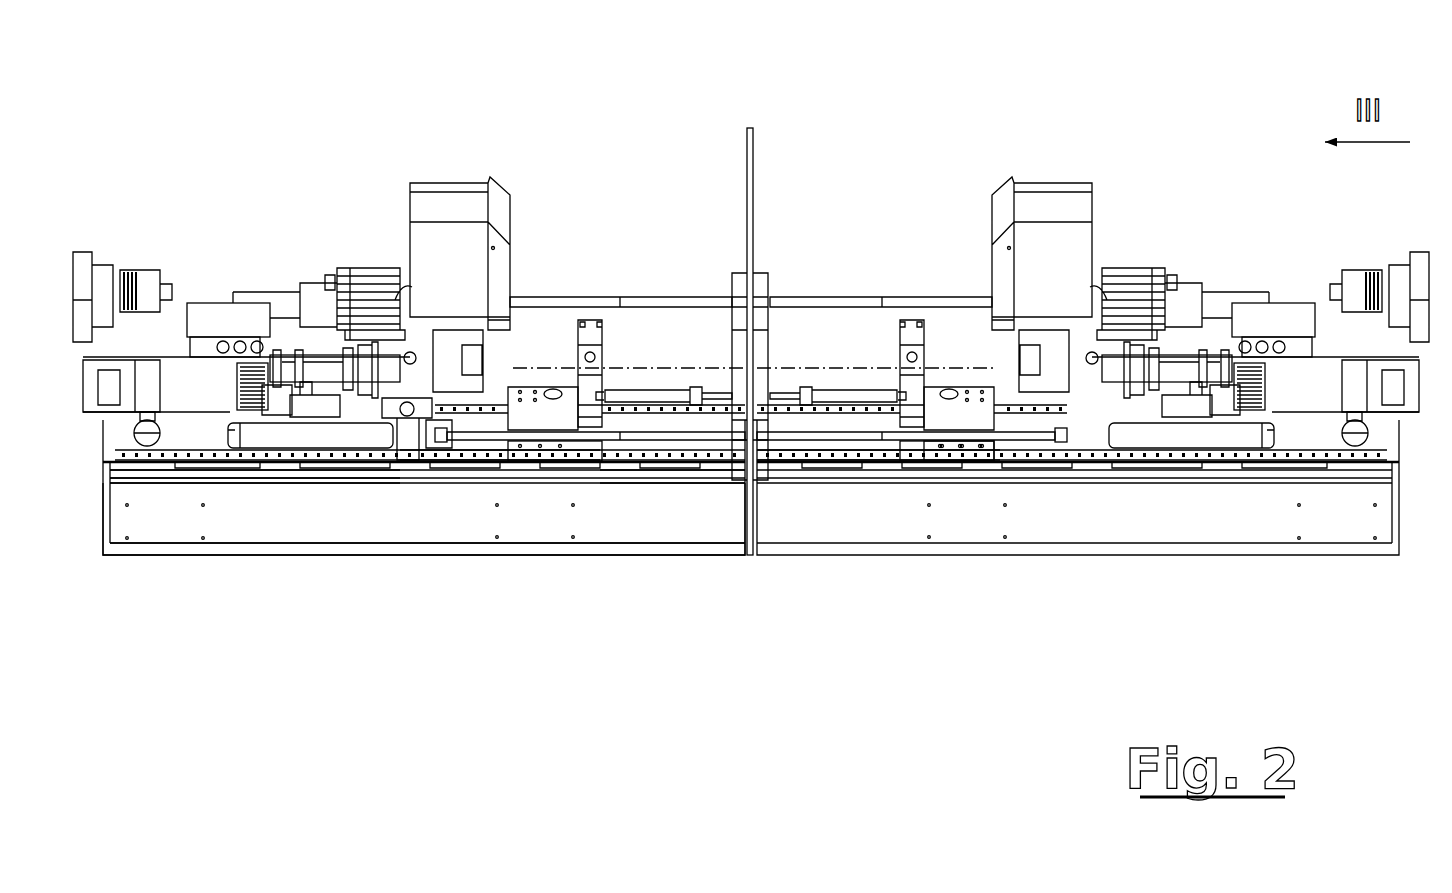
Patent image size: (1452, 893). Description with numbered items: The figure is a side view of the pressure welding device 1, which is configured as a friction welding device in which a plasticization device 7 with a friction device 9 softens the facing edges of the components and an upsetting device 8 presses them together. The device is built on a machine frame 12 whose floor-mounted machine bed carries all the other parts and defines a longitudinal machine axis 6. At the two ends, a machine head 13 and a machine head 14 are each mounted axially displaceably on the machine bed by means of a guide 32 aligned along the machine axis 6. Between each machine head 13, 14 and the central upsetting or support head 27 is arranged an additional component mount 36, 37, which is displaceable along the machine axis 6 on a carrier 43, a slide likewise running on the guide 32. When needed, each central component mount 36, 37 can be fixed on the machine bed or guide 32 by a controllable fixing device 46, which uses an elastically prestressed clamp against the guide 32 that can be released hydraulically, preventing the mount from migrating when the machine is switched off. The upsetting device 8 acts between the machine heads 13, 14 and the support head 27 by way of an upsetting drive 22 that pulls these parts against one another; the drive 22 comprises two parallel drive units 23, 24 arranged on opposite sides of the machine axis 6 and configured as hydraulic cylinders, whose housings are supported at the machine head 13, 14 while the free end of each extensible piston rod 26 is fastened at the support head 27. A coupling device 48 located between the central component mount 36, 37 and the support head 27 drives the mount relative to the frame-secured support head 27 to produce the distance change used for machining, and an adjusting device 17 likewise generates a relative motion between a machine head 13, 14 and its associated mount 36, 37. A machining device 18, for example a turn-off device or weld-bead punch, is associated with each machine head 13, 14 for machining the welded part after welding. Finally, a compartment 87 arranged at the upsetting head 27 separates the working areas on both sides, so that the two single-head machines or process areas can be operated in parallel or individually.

The pressure welding device 1 is at (751, 328).
The machine axis 6 is at (808, 365).
The plasticization device 7 is at (500, 544).
The friction device 9 is at (470, 485).
The upsetting device 8 is at (258, 485).
The machine frame 12 is at (584, 527).
The machine head 13 is at (392, 325).
The machine head 14 is at (1100, 347).
The adjusting device 17 is at (697, 488).
The machining device 18 is at (500, 215).
The upsetting drive 22 is at (372, 452).
The drive unit 23 is at (323, 433).
The drive unit 24 is at (275, 293).
The piston rod 26 is at (553, 303).
The upsetting or support head 27 is at (738, 285).
The guide 32 is at (822, 465).
The additional component mount 36 is at (590, 330).
The additional component mount 37 is at (910, 333).
The carrier 43 is at (942, 447).
The fixing device 46 is at (555, 393).
The coupling device 48 is at (668, 395).
The compartment 87 is at (748, 190).